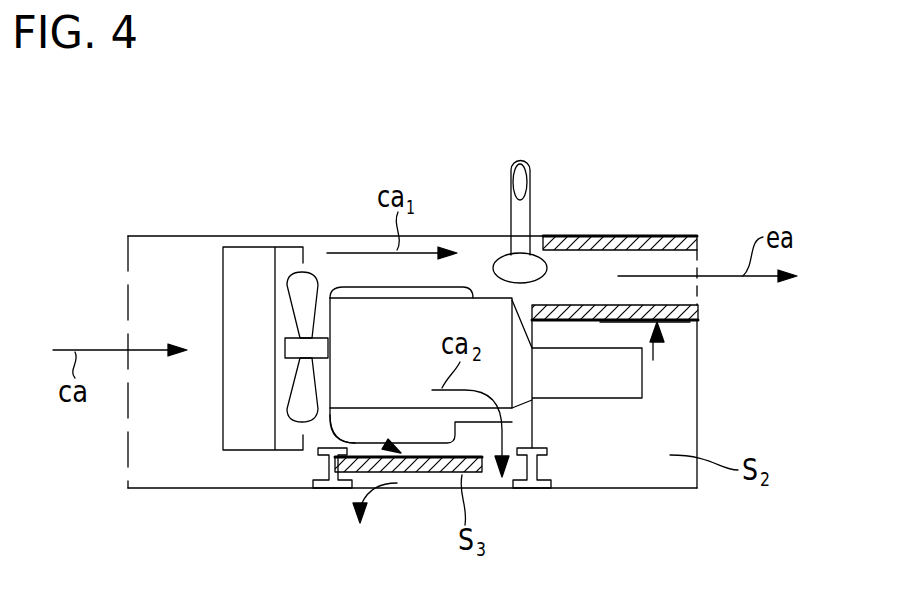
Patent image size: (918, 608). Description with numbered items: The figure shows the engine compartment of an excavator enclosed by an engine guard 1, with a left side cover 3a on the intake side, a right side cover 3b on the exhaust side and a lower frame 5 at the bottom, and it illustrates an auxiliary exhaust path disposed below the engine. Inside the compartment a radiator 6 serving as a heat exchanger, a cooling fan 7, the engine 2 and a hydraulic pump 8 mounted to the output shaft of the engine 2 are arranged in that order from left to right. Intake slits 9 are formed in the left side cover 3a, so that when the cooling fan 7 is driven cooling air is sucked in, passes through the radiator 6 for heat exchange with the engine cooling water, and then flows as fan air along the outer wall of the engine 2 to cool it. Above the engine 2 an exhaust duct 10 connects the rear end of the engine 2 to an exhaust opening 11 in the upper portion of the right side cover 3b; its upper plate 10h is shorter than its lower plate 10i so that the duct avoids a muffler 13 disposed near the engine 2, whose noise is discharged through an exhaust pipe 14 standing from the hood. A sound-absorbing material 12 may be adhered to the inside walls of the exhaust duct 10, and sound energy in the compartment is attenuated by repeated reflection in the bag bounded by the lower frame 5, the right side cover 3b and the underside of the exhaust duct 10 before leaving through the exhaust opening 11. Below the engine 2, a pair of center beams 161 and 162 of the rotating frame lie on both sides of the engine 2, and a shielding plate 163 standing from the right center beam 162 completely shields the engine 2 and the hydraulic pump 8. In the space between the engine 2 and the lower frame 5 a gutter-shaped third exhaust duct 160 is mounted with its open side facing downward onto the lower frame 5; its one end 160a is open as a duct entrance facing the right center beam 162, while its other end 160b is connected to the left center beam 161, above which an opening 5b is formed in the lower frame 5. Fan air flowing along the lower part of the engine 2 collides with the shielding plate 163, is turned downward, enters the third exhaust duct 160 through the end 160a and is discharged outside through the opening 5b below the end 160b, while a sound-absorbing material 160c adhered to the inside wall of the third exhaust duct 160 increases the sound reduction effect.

The engine guard 1 is at (340, 175).
The engine 2 is at (388, 348).
The left side cover 3a is at (128, 252).
The right side cover 3b is at (698, 418).
The lower frame 5 is at (402, 493).
The opening 5b is at (373, 493).
The radiator 6 is at (251, 264).
The cooling fan 7 is at (322, 263).
The hydraulic pump 8 is at (612, 380).
The intake slits 9 is at (128, 328).
The exhaust duct 10 is at (655, 358).
The upper plate 10h is at (563, 235).
The lower plate 10i is at (685, 323).
The exhaust opening 11 is at (700, 270).
The sound-absorbing material 12 is at (580, 305).
The muffler 13 is at (500, 253).
The exhaust pipe 14 is at (520, 153).
The third exhaust duct 160 is at (332, 427).
The one end 160a is at (483, 490).
The other end 160b is at (340, 490).
The sound-absorbing material 160c is at (432, 480).
The left center beam 161 is at (322, 468).
The right center beam 162 is at (548, 482).
The shielding plate 163 is at (537, 415).